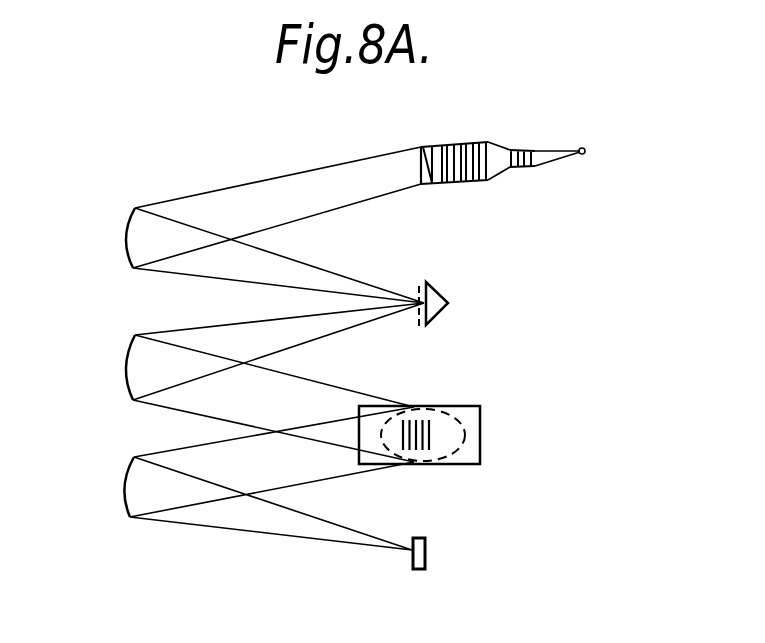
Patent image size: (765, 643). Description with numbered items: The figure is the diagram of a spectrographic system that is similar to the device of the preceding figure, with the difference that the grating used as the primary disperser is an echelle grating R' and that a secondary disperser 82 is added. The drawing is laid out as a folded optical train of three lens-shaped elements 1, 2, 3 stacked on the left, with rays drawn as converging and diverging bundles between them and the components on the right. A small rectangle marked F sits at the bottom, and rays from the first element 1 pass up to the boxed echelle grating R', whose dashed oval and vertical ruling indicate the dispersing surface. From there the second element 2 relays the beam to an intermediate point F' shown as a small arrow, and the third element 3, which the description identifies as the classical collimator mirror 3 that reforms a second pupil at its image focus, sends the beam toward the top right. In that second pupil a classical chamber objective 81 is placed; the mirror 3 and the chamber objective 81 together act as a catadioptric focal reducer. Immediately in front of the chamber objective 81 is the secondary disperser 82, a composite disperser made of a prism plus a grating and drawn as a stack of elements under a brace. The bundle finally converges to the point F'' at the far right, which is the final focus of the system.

The first lens 1 is at (124, 490).
The second lens 2 is at (124, 379).
The mirror 3 is at (124, 244).
The chamber objective 81 is at (450, 188).
The secondary disperser 82 is at (420, 136).
The light source / focus F is at (430, 554).
The intermediate image of F F' is at (450, 306).
The final image of F F'' is at (576, 150).
The echelle grating R' is at (442, 435).